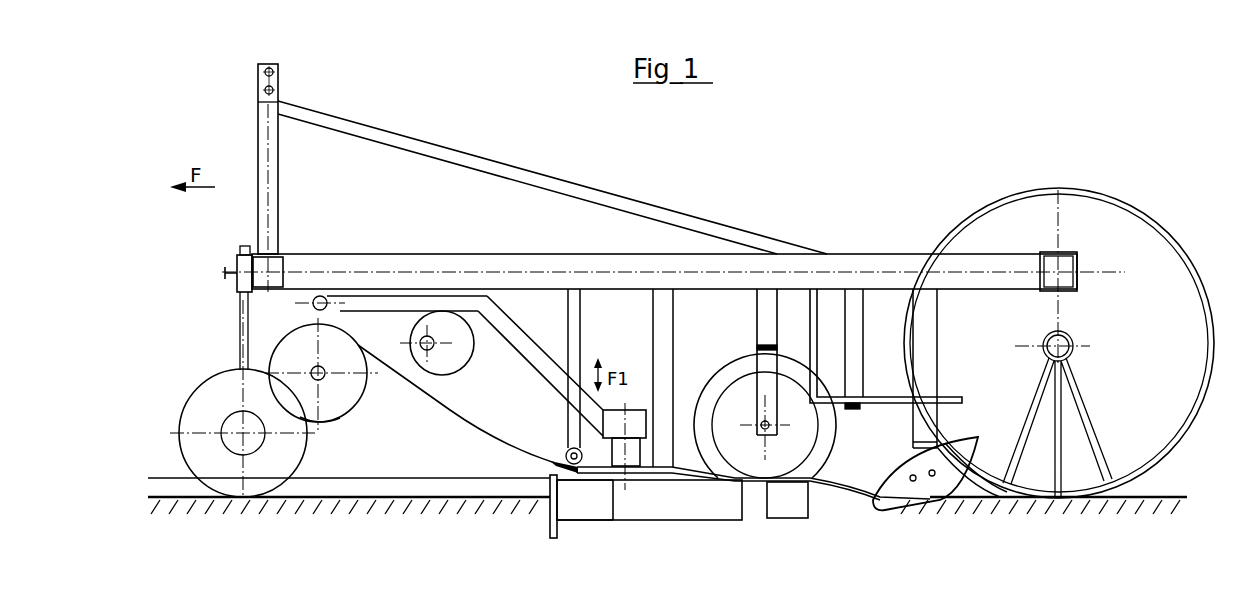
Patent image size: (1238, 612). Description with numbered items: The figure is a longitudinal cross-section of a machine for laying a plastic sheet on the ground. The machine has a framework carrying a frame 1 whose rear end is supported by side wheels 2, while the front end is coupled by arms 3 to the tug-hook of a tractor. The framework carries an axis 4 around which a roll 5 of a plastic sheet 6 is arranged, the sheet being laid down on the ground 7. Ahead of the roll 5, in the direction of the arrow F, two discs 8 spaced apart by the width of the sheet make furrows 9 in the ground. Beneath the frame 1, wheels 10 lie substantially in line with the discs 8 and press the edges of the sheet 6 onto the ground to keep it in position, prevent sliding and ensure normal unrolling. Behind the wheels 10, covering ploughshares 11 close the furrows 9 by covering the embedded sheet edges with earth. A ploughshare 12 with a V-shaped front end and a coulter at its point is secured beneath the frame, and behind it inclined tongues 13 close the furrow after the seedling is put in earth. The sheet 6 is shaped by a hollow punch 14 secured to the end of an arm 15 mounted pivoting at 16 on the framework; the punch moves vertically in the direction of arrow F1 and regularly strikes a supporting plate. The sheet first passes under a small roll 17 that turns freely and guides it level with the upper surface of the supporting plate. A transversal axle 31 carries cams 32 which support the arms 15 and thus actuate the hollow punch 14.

The frame 1 is at (416, 263).
The side wheels 2 is at (1009, 218).
The arms 3 is at (257, 115).
The axis 4 is at (323, 380).
The roll 5 is at (332, 407).
The plastic sheet 6 is at (502, 438).
The ground 7 is at (1025, 512).
The discs 8 is at (270, 468).
The furrows 9 is at (430, 487).
The wheels 10 is at (731, 355).
The covering ploughshares 11 is at (930, 503).
The ploughshare 12 is at (715, 507).
The tongues 13 is at (797, 507).
The hollow punch 14 is at (617, 452).
The arm 15 is at (512, 327).
The pivot 16 is at (315, 296).
The small roll 17 is at (575, 464).
The transversal axle 31 is at (427, 353).
The cams 32 is at (449, 373).